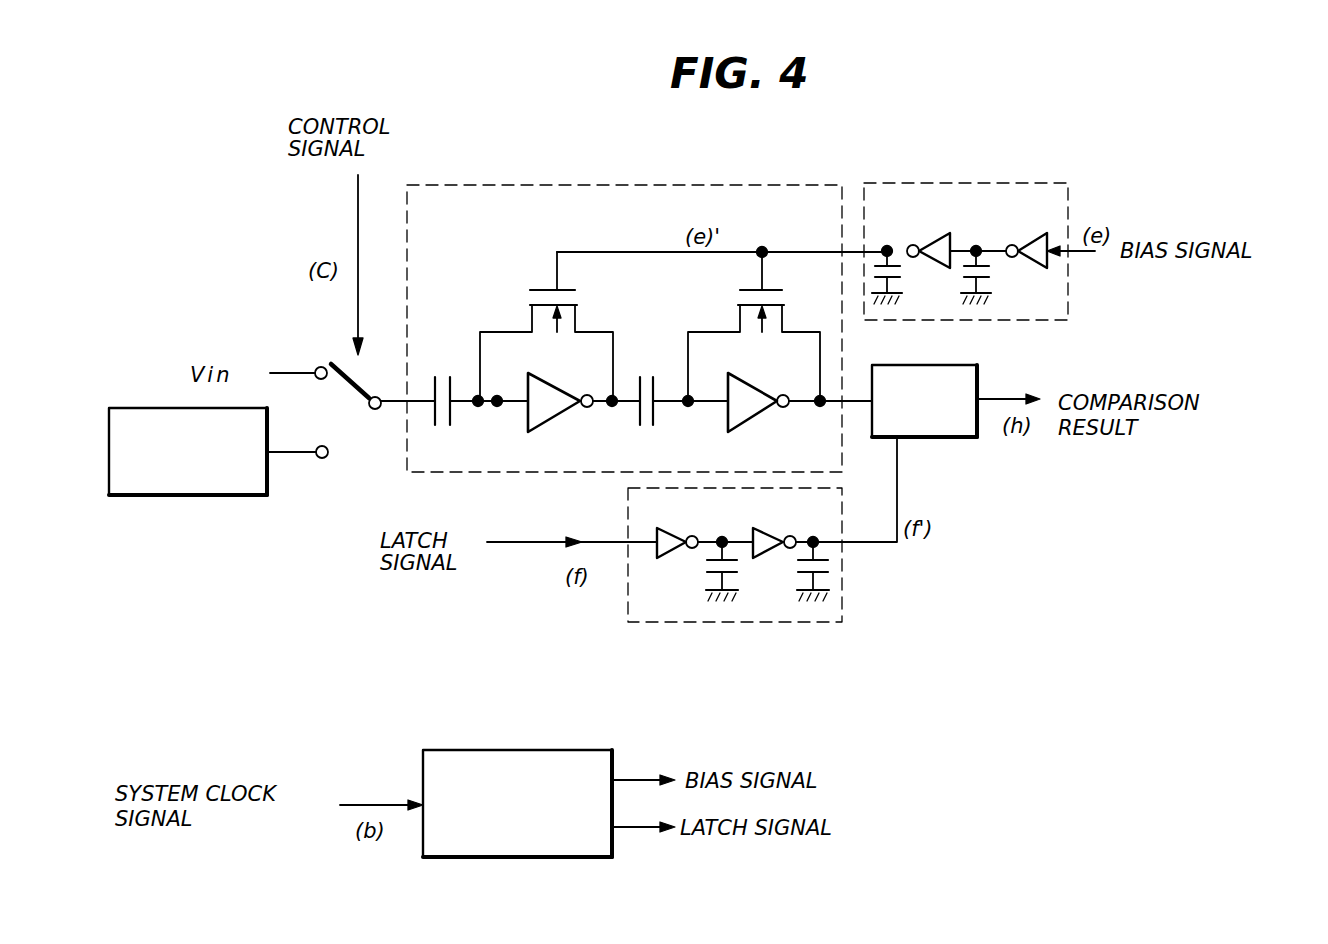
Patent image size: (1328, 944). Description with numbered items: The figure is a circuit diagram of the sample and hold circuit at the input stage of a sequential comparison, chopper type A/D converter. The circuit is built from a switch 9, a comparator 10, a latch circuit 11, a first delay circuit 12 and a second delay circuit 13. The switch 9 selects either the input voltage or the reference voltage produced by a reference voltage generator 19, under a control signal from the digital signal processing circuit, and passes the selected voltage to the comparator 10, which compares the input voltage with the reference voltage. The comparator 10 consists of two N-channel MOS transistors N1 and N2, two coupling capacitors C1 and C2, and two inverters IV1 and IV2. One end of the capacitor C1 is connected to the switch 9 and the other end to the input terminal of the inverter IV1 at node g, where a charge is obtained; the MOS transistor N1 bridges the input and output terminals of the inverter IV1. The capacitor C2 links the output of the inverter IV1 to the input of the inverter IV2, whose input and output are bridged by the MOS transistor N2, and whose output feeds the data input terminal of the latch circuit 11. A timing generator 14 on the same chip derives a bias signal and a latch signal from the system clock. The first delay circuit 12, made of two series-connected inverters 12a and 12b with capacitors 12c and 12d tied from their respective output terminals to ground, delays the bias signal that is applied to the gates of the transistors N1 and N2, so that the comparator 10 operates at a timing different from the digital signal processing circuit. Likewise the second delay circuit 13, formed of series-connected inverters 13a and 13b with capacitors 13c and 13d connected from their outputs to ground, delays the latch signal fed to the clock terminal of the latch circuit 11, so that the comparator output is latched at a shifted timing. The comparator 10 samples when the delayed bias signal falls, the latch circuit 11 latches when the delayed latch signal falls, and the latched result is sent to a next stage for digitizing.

The switch 9 is at (368, 410).
The reference voltage generator 19 is at (178, 495).
The comparator 10 is at (530, 183).
The coupling capacitor C1 is at (479, 419).
The coupling capacitor C2 is at (682, 419).
The node g is at (497, 407).
The inverter IV1 is at (584, 417).
The inverter IV2 is at (800, 417).
The N-channel MOS transistor N1 is at (549, 326).
The N-channel MOS transistor N2 is at (754, 324).
The latch circuit 11 is at (950, 437).
The first delay circuit 12 is at (940, 183).
The inverter 12a is at (930, 232).
The inverter 12b is at (1032, 232).
The capacitor 12c is at (908, 275).
The capacitor 12d is at (1001, 275).
The second delay circuit 13 is at (842, 612).
The inverter 13a is at (679, 535).
The inverter 13b is at (778, 535).
The capacitor 13c is at (699, 569).
The capacitor 13d is at (789, 569).
The timing generator 14 is at (547, 750).